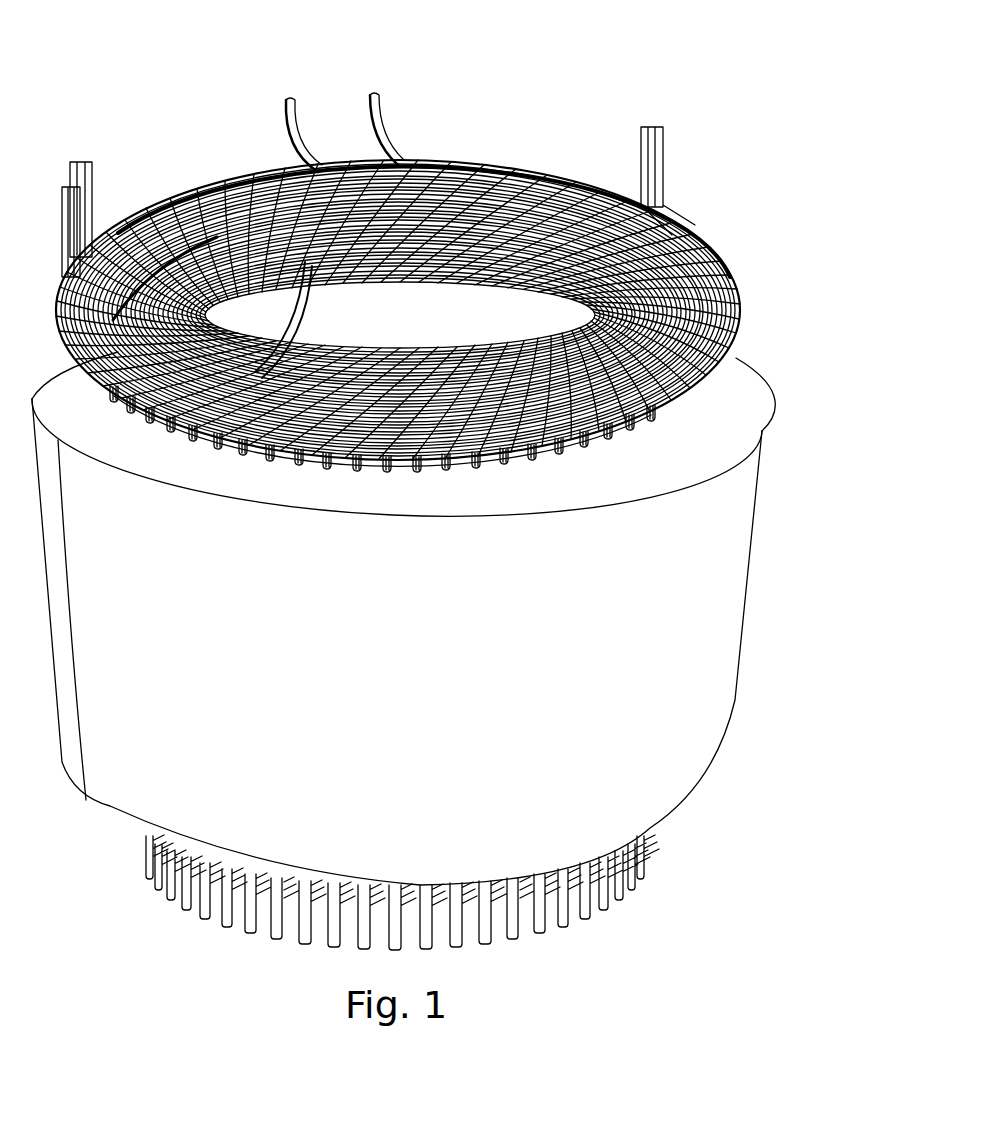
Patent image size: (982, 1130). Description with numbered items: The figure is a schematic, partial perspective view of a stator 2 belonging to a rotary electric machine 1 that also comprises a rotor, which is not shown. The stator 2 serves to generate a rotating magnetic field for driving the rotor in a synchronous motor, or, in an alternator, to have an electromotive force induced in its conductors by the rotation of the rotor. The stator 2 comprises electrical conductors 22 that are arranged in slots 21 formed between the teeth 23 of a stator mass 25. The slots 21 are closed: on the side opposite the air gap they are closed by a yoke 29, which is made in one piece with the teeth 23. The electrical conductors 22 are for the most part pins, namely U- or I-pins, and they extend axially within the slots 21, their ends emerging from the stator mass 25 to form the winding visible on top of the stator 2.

The rotary electric machine 1 is at (403, 486).
The stator 2 is at (252, 155).
The slots 21 is at (283, 470).
The electrical conductors 22 is at (98, 182).
The teeth 23 is at (400, 478).
The stator mass 25 is at (568, 513).
The yoke 29 is at (190, 470).